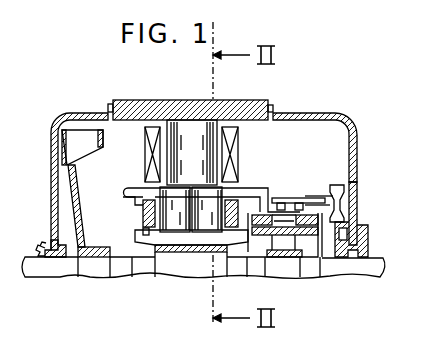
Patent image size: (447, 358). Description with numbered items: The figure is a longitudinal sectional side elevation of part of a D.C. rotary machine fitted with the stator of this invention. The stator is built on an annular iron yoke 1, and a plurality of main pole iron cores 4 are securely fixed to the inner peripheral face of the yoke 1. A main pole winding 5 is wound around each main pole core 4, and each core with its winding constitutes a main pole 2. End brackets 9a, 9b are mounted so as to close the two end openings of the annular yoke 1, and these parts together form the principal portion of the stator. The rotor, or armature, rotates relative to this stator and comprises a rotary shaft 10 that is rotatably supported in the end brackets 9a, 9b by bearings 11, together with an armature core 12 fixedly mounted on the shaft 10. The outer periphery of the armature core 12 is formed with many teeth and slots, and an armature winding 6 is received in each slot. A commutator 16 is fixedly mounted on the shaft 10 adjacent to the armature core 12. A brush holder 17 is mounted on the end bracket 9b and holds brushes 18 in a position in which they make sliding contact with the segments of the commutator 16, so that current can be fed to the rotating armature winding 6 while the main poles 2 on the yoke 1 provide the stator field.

The iron yoke 1 is at (256, 101).
The main pole 2 is at (173, 127).
The main pole iron core 4 is at (182, 128).
The main pole winding 5 is at (238, 148).
The armature winding 6 is at (250, 195).
The end bracket 9a is at (52, 156).
The end bracket 9b is at (354, 130).
The rotary shaft 10 is at (120, 268).
The bearing 11 is at (55, 260).
The armature core 12 is at (178, 220).
The commutator 16 is at (291, 235).
The brush holder 17 is at (298, 192).
The brush 18 is at (344, 206).